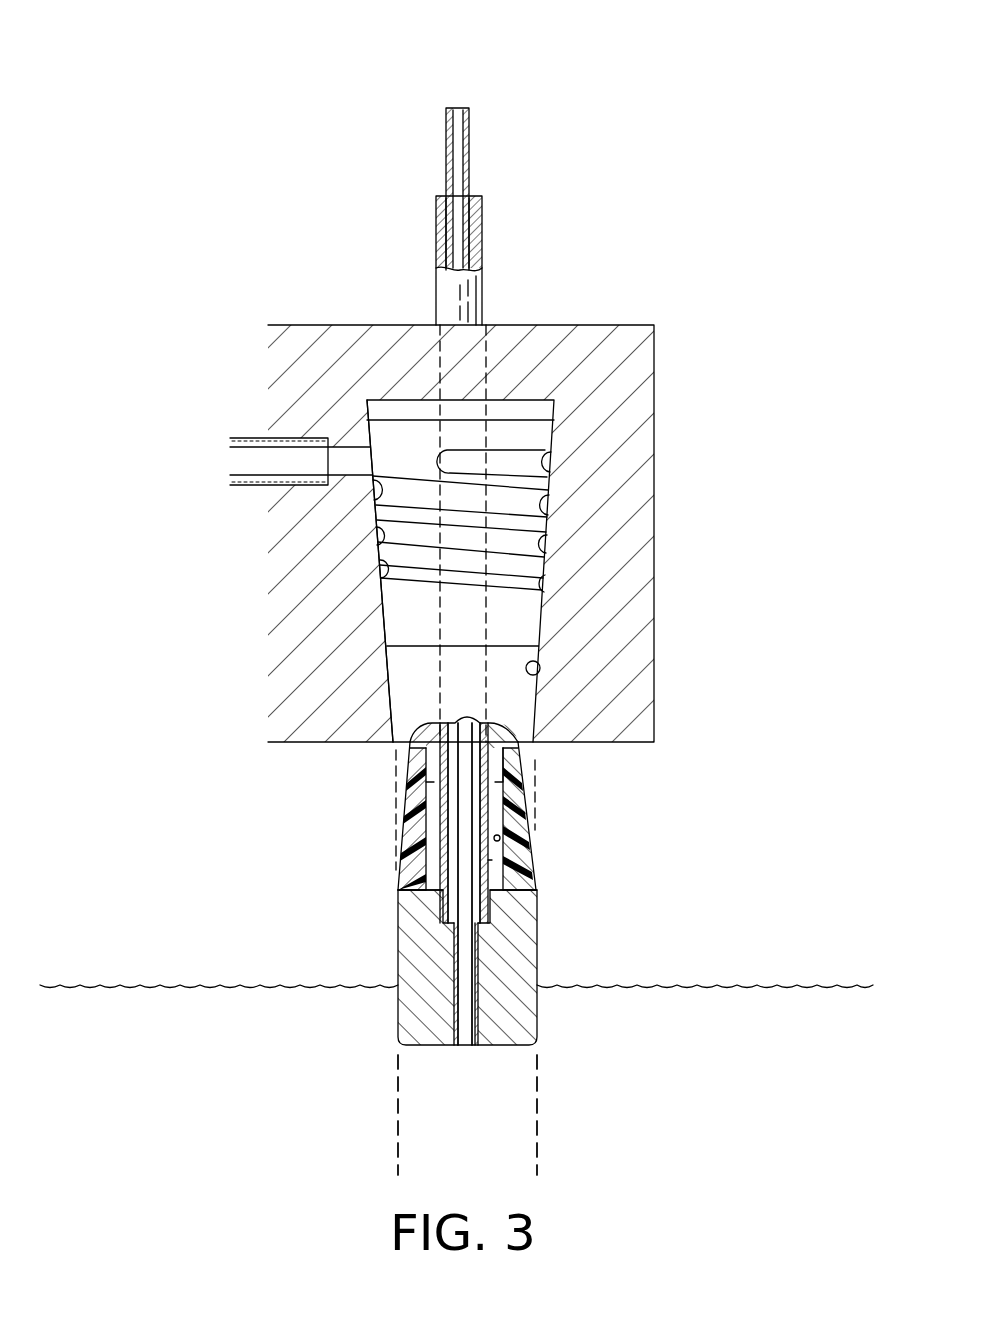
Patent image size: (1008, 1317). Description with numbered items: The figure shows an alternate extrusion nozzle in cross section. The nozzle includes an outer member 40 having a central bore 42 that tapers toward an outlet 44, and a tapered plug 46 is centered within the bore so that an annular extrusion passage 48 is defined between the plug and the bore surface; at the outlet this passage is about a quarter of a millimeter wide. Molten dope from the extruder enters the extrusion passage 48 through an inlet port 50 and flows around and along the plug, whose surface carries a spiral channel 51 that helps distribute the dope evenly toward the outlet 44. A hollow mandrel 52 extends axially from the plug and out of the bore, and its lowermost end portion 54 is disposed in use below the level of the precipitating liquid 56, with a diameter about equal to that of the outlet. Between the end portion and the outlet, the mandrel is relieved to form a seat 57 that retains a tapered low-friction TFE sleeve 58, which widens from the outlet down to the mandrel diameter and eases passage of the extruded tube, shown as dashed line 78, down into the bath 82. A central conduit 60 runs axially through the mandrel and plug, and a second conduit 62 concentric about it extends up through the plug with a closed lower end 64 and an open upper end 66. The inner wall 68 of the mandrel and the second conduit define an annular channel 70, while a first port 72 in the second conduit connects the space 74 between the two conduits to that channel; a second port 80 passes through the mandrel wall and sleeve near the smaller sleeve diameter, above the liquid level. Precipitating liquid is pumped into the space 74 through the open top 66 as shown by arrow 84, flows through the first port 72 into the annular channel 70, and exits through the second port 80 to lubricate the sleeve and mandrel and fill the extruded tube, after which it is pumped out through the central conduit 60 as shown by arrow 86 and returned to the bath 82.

The outer member 40 is at (626, 325).
The central bore 42 is at (541, 666).
The outlet 44 is at (533, 745).
The tapered plug 46 is at (524, 628).
The annular extrusion passage 48 is at (378, 562).
The inlet port 50 is at (237, 462).
The spiral channel 51 is at (502, 460).
The hollow mandrel 52 is at (537, 920).
The lowermost end portion 54 is at (422, 1012).
The level of the precipitating liquid 56 is at (784, 985).
The seat 57 is at (412, 753).
The sleeve 58 is at (395, 890).
The central conduit 60 is at (470, 147).
The second conduit 62 is at (436, 298).
The closed lower end 64 is at (490, 920).
The upper end 66 is at (436, 232).
The inner wall 68 is at (505, 842).
The annular channel 70 is at (440, 830).
The first port 72 is at (497, 850).
The space between the concentric conduits 74 is at (457, 905).
The extruded nonderivatized cellulose tube 78 is at (396, 818).
The second port 80 is at (507, 783).
The bath 82 is at (668, 1120).
The arrow 84 is at (442, 186).
The arrow 86 is at (459, 92).